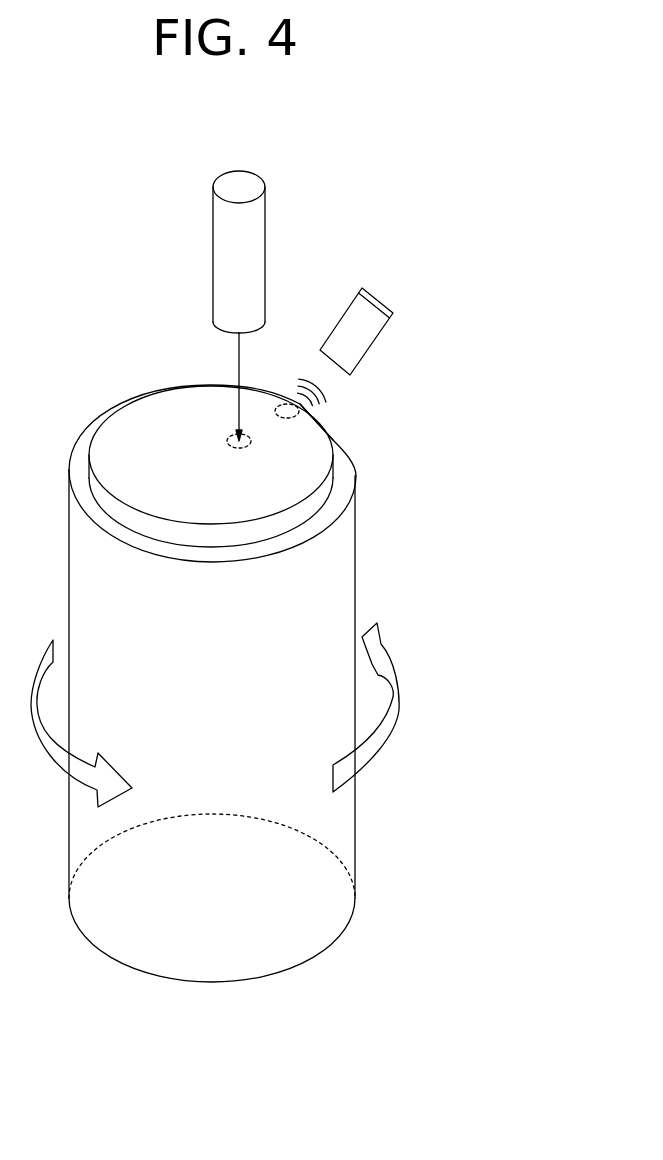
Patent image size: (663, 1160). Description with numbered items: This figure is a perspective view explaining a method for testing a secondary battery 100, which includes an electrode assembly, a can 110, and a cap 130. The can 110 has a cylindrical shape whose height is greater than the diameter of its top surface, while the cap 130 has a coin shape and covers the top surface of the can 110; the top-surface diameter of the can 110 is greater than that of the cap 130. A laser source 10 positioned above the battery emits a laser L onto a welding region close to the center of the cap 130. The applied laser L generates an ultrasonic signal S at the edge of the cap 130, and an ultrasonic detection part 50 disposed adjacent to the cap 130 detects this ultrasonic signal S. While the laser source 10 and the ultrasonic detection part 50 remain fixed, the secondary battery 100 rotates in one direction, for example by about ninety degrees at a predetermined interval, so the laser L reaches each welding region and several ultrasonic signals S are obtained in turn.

The laser source 10 is at (227, 253).
The laser L is at (238, 352).
The ultrasonic detection part 50 is at (367, 330).
The ultrasonic signal S is at (317, 397).
The secondary battery 100 is at (295, 683).
The can 110 is at (333, 555).
The cap 130 is at (313, 457).